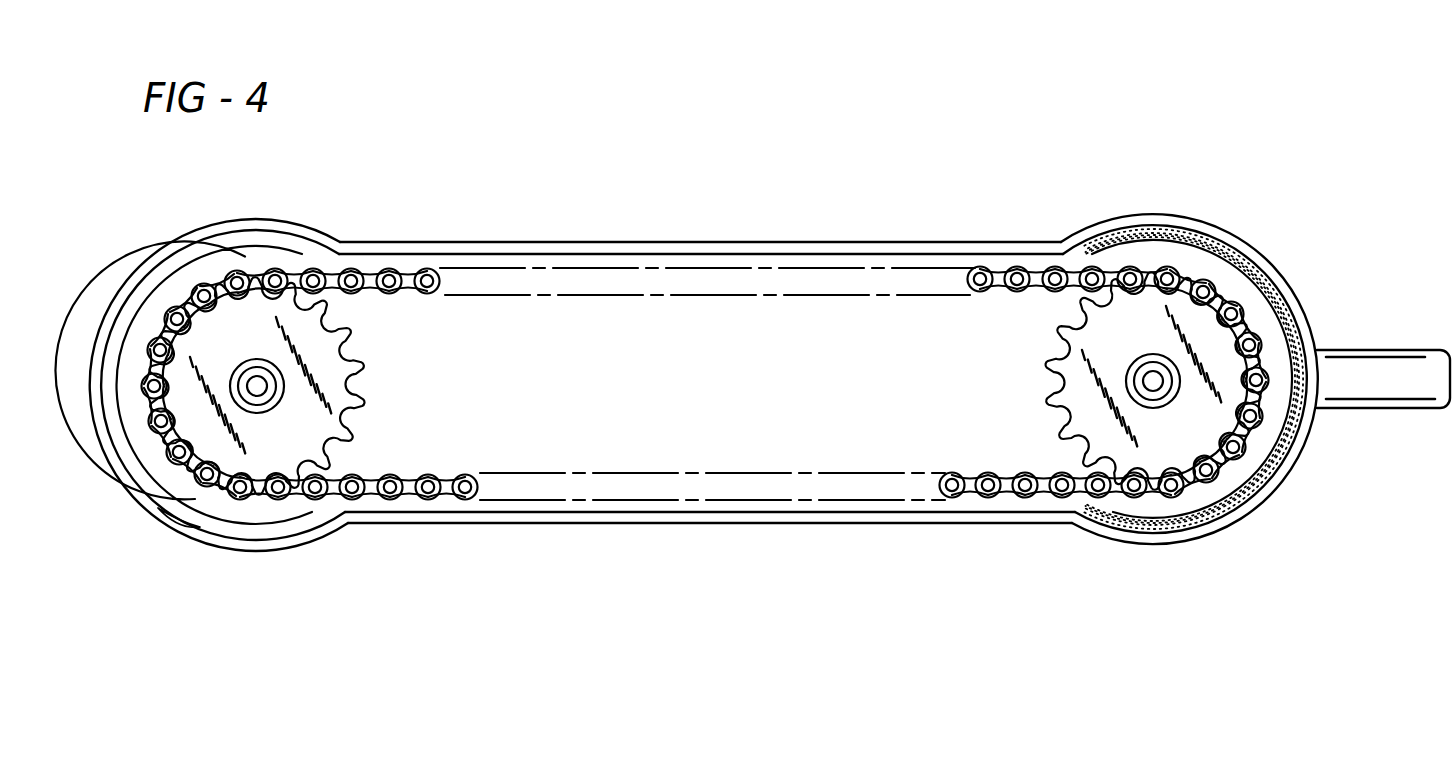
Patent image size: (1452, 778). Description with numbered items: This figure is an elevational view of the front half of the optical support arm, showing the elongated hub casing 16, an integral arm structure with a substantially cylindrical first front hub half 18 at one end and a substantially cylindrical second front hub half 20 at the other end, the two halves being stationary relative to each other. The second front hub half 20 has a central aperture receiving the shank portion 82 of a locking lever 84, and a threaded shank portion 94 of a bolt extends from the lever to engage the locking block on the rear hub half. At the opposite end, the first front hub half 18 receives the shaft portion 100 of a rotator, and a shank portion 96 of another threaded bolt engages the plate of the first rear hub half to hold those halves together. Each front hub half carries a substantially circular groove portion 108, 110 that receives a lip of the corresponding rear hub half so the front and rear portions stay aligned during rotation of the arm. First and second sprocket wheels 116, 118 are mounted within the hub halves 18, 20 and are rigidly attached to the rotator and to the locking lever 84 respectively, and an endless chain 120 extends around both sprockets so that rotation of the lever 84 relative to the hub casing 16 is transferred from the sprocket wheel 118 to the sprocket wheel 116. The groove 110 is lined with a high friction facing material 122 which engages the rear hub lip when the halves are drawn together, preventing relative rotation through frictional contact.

The elongated hub casing 16 is at (692, 236).
The first front hub half 18 is at (192, 221).
The second front hub half 20 is at (1072, 216).
The shank portion 82 is at (1153, 378).
The locking lever 84 is at (1355, 340).
The threaded shank portion 94 is at (1153, 380).
The shank portion 96 is at (257, 387).
The shaft portion 100 is at (238, 367).
The groove portion 108 is at (190, 517).
The groove portion 110 is at (1201, 520).
The first sprocket wheel 116 is at (332, 381).
The second sprocket wheel 118 is at (1077, 381).
The endless chain 120 is at (432, 298).
The high friction facing material 122 is at (1287, 450).